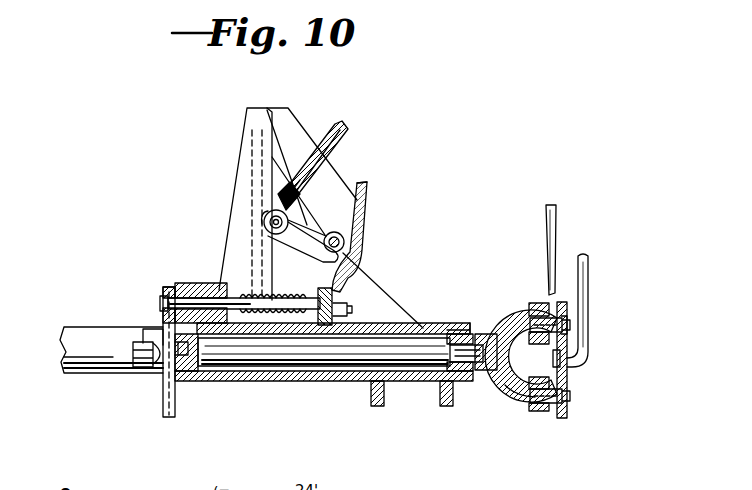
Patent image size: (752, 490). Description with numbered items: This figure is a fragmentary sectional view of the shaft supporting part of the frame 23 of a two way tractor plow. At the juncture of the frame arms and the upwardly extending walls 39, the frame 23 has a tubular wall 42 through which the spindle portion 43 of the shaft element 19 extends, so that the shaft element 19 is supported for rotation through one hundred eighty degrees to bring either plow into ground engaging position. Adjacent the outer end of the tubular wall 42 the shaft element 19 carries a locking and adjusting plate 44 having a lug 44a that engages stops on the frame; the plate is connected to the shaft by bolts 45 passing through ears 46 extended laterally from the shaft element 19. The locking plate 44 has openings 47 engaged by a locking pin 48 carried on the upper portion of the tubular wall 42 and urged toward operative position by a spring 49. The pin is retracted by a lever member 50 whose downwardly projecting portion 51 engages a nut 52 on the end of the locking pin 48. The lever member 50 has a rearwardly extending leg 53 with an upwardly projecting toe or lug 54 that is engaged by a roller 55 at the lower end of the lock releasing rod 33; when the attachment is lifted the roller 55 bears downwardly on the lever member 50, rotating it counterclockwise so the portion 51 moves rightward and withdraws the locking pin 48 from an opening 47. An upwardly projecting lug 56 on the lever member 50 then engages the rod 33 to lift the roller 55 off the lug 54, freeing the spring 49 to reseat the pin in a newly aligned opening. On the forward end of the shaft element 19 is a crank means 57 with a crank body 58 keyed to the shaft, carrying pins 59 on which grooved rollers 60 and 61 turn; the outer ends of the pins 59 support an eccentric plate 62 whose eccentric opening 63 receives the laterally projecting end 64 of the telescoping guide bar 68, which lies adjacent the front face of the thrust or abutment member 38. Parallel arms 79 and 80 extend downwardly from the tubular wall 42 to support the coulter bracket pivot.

The shaft element 19 is at (100, 330).
The frame 23 is at (192, 376).
The lock releasing rod 33 is at (313, 145).
The thrust or abutment member 38 is at (548, 238).
The upwardly extending walls 39 is at (250, 190).
The tubular wall 42 is at (357, 330).
The spindle portion 43 is at (290, 350).
The locking and adjusting plate 44 is at (166, 384).
The lug 44a is at (182, 358).
The bolts 45 is at (138, 360).
The ears 46 is at (150, 330).
The openings 47 is at (168, 287).
The locking pin 48 is at (198, 288).
The spring 49 is at (260, 320).
The lever member 50 is at (357, 232).
The downwardly projecting portion 51 is at (345, 300).
The nut 52 is at (333, 302).
The rearwardly extending leg 53 is at (302, 212).
The toe or lug 54 is at (258, 230).
The roller 55 is at (270, 208).
The upwardly projecting lug 56 is at (362, 198).
The crank means 57 is at (518, 402).
The crank body 58 is at (498, 392).
The pins 59 is at (536, 320).
The roller 60 is at (568, 330).
The roller 61 is at (548, 402).
The plate 62 is at (552, 322).
The eccentric opening 63 is at (568, 373).
The laterally projecting end 64 is at (580, 356).
The telescoping guide bar 68 is at (586, 262).
The arm 79 is at (442, 394).
The arm 80 is at (370, 394).